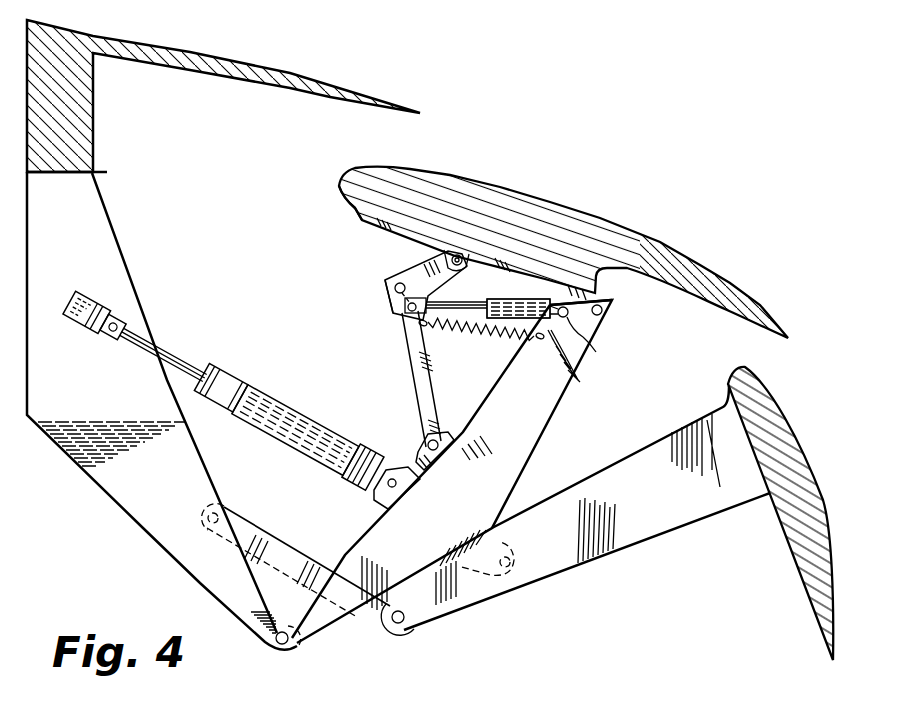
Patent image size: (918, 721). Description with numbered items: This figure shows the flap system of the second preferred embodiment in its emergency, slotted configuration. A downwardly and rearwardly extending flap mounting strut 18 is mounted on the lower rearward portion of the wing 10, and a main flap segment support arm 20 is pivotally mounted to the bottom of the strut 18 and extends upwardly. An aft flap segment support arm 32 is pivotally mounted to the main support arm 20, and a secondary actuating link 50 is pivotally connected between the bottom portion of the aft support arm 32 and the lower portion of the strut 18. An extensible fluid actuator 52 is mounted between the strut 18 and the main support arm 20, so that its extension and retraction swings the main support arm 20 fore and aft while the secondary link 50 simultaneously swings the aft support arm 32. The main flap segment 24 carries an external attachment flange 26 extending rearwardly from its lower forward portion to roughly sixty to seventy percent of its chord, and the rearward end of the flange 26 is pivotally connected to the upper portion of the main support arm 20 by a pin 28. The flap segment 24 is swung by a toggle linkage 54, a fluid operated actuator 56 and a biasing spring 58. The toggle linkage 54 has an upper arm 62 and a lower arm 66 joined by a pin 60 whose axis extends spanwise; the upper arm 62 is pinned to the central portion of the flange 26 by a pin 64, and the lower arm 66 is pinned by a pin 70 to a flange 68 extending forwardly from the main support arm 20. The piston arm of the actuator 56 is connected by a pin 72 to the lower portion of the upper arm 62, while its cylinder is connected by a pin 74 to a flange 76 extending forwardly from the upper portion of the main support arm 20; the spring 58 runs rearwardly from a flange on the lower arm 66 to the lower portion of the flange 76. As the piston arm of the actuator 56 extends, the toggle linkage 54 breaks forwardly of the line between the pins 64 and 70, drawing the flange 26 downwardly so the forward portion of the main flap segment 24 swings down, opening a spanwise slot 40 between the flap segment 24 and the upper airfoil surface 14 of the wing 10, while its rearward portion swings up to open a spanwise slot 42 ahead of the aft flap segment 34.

The wing 10 is at (72, 16).
The upper airfoil surface 14 is at (250, 63).
The flap mounting strut 18 is at (127, 498).
The main flap segment support arm 20 is at (540, 422).
The main flap segment 24 is at (638, 240).
The external attachment flange 26 is at (356, 213).
The pin 28 is at (603, 313).
The aft flap segment support arm 32 is at (632, 534).
The aft flap segment 34 is at (797, 480).
The spanwise slot 40 is at (412, 138).
The spanwise slot 42 is at (782, 357).
The secondary actuating link 50 is at (382, 616).
The extensible fluid actuator 52 is at (300, 432).
The toggle linkage 54 is at (366, 290).
The fluid operated actuator 56 is at (516, 296).
The biasing spring 58 is at (481, 350).
The pin 60 is at (397, 304).
The upper arm 62 is at (399, 283).
The pin 64 is at (442, 248).
The lower arm 66 is at (413, 370).
The flange 68 is at (422, 448).
The pin 70 is at (428, 444).
The pin 72 is at (442, 287).
The pin 74 is at (590, 342).
The flange 76 is at (580, 362).